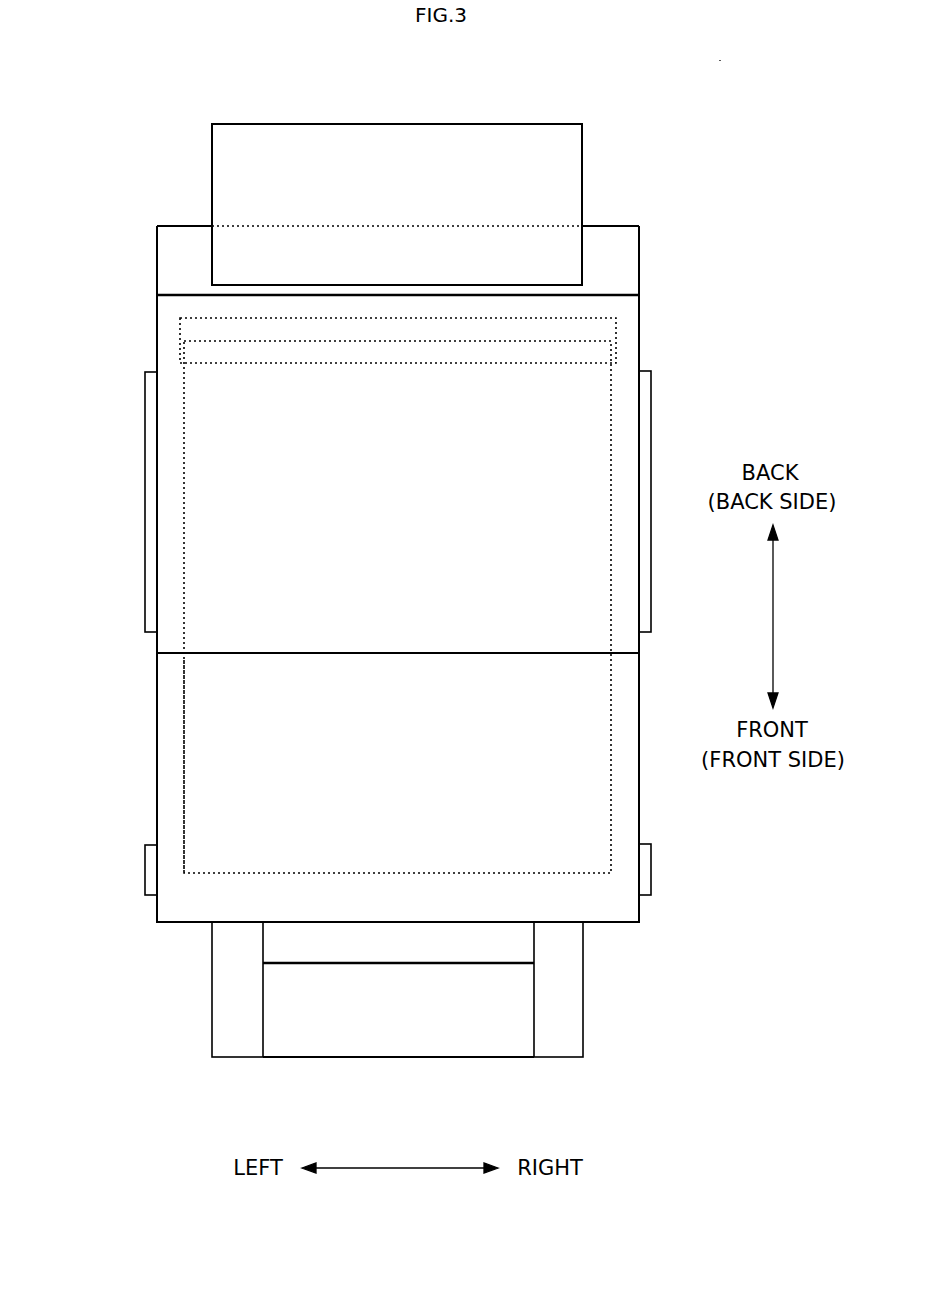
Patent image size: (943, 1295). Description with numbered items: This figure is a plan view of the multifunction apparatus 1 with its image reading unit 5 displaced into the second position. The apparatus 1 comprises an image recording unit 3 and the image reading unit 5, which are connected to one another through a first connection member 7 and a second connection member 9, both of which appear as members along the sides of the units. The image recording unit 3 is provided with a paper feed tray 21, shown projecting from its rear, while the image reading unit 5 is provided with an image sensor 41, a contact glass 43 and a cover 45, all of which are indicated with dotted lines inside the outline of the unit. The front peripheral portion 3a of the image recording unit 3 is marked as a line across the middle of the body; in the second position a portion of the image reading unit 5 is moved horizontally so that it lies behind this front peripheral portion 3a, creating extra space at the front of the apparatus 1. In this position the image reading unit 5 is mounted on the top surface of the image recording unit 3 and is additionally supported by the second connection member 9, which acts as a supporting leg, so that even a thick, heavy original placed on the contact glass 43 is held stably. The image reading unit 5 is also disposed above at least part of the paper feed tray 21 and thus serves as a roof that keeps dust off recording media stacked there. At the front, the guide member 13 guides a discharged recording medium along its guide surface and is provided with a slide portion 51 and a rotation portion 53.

The multifunction apparatus 1 is at (676, 147).
The image recording unit 3 is at (630, 263).
The front peripheral portion 3a is at (178, 656).
The image reading unit 5 is at (628, 803).
The first connection member 7 is at (145, 424).
The second connection member 9 is at (145, 868).
The guide member 13 is at (222, 983).
The paper feed tray 21 is at (535, 150).
The image sensor 41 is at (180, 338).
The contact glass 43 is at (596, 706).
The cover 45 is at (175, 775).
The slide portion 51 is at (573, 992).
The rotation portion 53 is at (303, 1046).